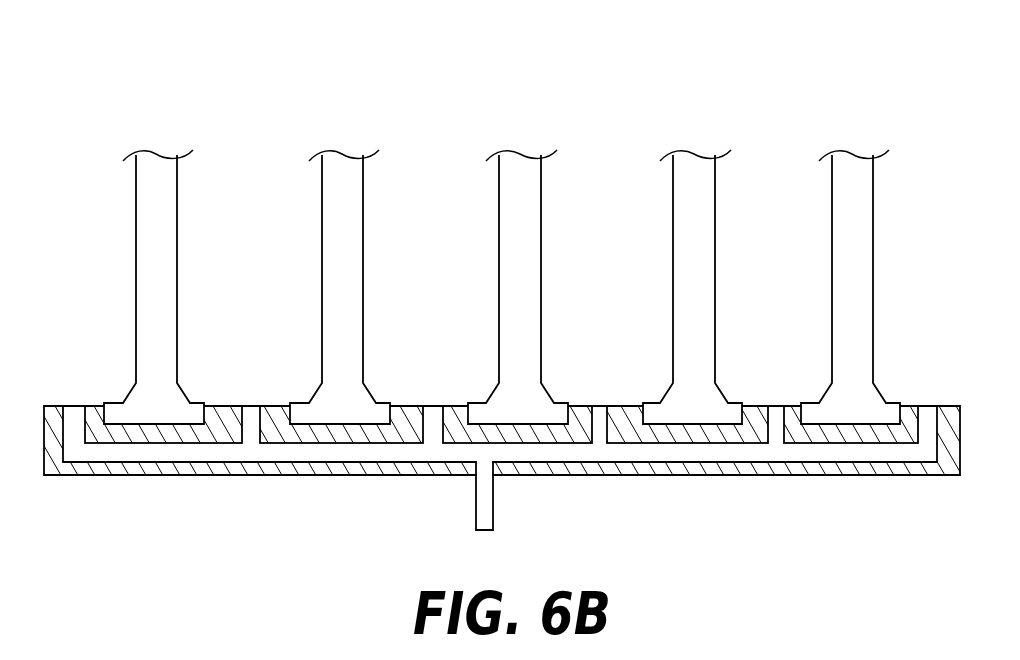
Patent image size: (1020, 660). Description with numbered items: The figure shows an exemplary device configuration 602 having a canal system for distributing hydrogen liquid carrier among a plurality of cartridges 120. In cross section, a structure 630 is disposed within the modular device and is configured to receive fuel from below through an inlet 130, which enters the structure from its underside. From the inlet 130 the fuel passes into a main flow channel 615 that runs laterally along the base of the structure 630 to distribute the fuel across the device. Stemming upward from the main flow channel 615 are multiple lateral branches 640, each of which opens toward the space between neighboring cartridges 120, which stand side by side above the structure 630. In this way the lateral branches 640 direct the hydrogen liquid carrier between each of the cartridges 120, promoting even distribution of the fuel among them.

The pillar array structure 602 is at (522, 46).
The cartridge 120 is at (167, 318).
The inlet 130 is at (488, 508).
The main flow channel 615 is at (705, 453).
The structure 630 is at (54, 468).
The lateral branches 640 is at (595, 407).